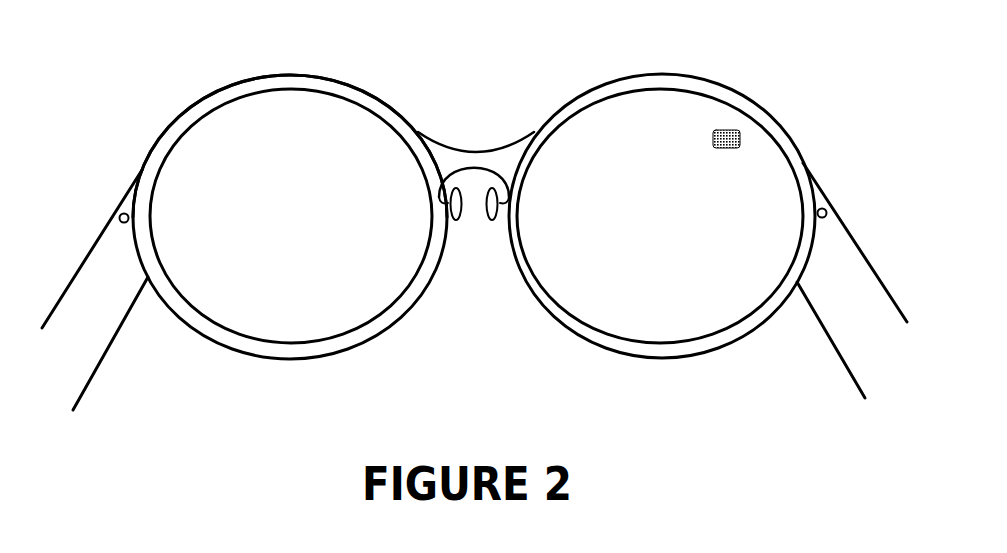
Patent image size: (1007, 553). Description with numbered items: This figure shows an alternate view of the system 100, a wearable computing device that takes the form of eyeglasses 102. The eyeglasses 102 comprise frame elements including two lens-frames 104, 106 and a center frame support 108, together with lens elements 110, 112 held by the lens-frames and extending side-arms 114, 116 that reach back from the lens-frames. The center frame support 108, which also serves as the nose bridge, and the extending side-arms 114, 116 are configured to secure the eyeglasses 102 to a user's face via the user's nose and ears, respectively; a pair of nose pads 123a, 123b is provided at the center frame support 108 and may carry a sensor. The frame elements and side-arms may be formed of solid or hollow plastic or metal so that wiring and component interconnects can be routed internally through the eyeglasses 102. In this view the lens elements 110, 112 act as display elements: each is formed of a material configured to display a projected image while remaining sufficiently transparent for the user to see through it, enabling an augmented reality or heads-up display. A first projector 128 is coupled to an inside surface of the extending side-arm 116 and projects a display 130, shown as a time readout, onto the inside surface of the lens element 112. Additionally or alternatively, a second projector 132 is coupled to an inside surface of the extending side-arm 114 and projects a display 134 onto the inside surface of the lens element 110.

The system 100 is at (474, 261).
The eyeglasses 102 is at (249, 75).
The lens-frame 104 is at (747, 333).
The lens-frame 106 is at (175, 313).
The center frame support 108 is at (458, 148).
The lens element 110 is at (658, 323).
The lens element 112 is at (302, 327).
The extending side-arm 114 is at (850, 233).
The extending side-arm 116 is at (98, 240).
The nose pad 123a is at (457, 222).
The nose pad 123b is at (500, 218).
The first projector 128 is at (122, 212).
The display 130 is at (268, 131).
The second projector 132 is at (818, 208).
The display 134 is at (740, 153).